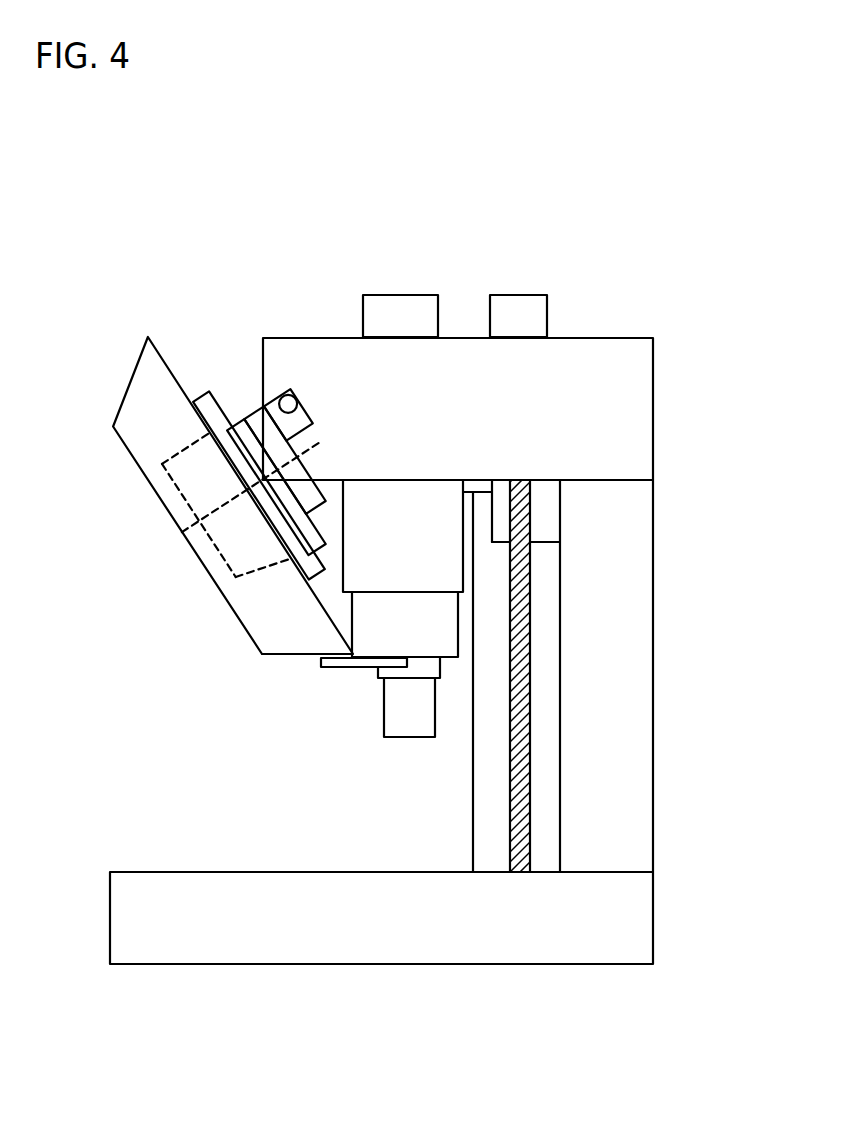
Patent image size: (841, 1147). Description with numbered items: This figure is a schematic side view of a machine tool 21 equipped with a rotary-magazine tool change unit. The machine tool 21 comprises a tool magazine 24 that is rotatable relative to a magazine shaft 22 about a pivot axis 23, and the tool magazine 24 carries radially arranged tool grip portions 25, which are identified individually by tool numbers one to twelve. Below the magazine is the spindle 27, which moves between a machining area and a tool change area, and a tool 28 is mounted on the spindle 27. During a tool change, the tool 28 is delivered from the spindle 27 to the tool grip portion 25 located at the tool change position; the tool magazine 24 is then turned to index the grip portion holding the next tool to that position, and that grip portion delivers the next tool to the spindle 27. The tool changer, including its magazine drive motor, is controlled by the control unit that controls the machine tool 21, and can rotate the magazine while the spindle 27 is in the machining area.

The machine tool 21 is at (685, 305).
The magazine shaft 22 is at (248, 563).
The pivot axis 23 is at (238, 542).
The tool magazine 24 is at (194, 507).
The tool grip portions 25 is at (330, 668).
The spindle 27 is at (368, 632).
The tool 28 is at (417, 738).